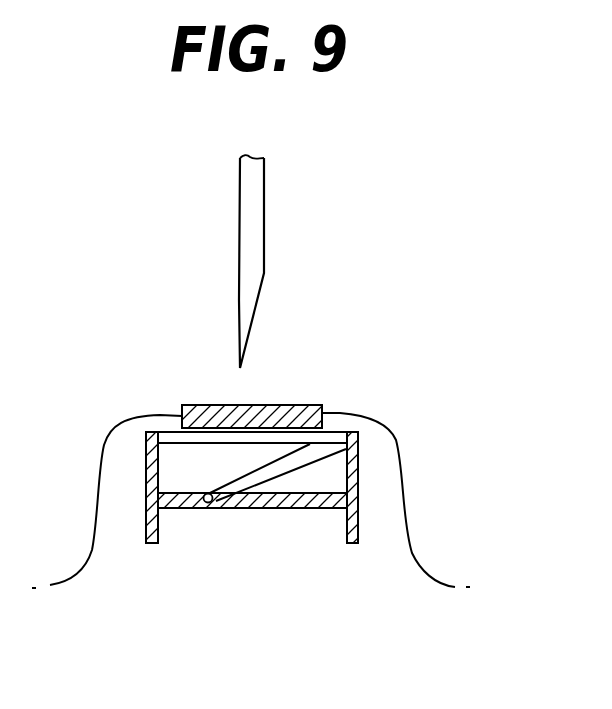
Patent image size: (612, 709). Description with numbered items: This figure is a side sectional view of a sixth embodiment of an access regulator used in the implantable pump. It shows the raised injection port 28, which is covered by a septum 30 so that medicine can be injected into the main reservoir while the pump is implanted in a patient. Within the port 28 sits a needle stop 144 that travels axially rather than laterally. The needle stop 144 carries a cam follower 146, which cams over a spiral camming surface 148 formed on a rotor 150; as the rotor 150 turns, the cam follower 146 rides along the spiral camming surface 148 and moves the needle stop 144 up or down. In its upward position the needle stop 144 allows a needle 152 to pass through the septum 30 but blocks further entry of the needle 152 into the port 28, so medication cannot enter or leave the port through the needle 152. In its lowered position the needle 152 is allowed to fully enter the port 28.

The raised injection port 28 is at (452, 496).
The septum 30 is at (282, 412).
The needle stop 144 is at (277, 503).
The cam follower 146 is at (210, 508).
The spiral camming surface 148 is at (300, 462).
The rotor 150 is at (358, 448).
The needle 152 is at (258, 258).